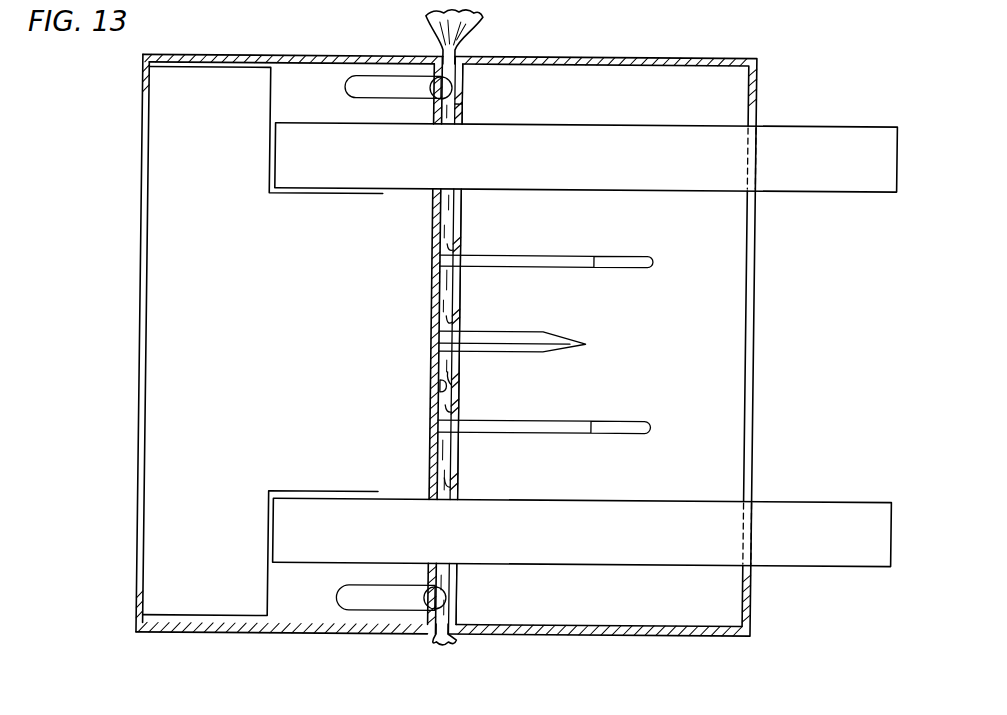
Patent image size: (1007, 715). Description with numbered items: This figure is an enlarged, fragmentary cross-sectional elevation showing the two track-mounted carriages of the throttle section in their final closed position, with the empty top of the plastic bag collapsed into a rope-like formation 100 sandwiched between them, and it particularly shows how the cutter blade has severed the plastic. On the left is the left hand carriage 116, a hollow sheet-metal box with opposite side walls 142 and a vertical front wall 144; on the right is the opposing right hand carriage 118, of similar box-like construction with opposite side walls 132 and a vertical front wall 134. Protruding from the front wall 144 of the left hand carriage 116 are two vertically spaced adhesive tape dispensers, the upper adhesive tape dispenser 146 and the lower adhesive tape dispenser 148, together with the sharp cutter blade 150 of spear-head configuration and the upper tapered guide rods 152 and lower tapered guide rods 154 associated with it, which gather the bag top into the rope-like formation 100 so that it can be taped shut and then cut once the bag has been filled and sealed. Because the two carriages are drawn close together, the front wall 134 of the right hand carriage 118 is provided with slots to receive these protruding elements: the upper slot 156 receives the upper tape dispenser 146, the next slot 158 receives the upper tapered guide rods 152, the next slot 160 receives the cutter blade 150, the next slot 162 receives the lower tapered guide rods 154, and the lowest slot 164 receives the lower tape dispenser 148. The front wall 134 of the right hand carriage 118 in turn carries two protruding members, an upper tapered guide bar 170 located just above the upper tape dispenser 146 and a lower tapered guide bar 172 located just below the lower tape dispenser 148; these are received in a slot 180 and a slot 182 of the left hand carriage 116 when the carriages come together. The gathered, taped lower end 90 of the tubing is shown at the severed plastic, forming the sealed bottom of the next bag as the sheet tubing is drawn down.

The gathered lower end 90 is at (544, 0).
The rope-like formation 100 is at (444, 295).
The left hand carriage 116 is at (262, 350).
The right hand carriage 118 is at (722, 480).
The side walls 132 is at (658, 86).
The vertical front wall 134 is at (462, 383).
The side walls 142 is at (159, 264).
The vertical front wall 144 is at (440, 390).
The upper adhesive tape dispenser 146 is at (822, 140).
The lower adhesive tape dispenser 148 is at (797, 517).
The cutter blade 150 is at (575, 337).
The upper tapered guide rods 152 is at (641, 256).
The lower tapered guide rods 154 is at (638, 418).
The upper slot 156 is at (458, 104).
The slot 158 is at (461, 248).
The slot 160 is at (462, 320).
The slot 162 is at (463, 410).
The lowest slot 164 is at (464, 484).
The upper tapered guide bar 170 is at (382, 85).
The lower tapered guide bar 172 is at (348, 598).
The slot 180 is at (432, 105).
The slot 182 is at (438, 578).